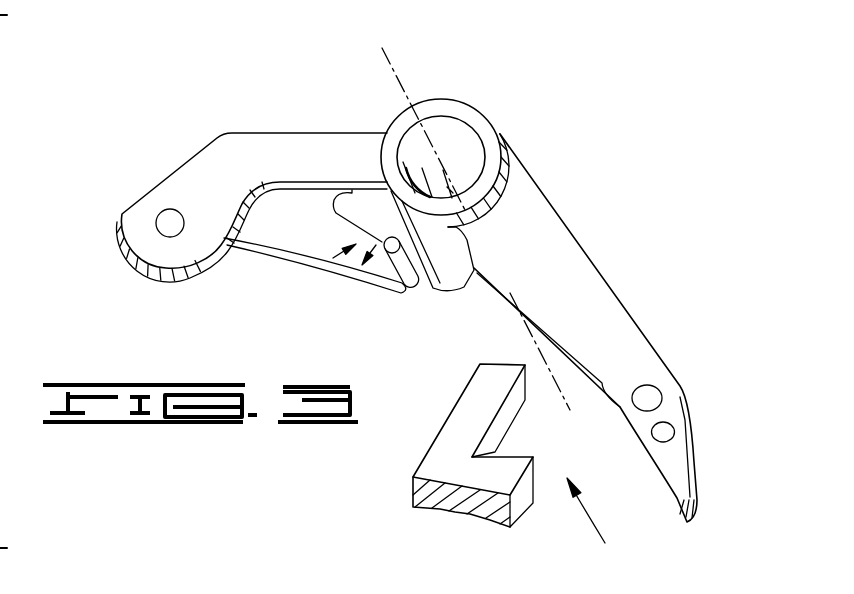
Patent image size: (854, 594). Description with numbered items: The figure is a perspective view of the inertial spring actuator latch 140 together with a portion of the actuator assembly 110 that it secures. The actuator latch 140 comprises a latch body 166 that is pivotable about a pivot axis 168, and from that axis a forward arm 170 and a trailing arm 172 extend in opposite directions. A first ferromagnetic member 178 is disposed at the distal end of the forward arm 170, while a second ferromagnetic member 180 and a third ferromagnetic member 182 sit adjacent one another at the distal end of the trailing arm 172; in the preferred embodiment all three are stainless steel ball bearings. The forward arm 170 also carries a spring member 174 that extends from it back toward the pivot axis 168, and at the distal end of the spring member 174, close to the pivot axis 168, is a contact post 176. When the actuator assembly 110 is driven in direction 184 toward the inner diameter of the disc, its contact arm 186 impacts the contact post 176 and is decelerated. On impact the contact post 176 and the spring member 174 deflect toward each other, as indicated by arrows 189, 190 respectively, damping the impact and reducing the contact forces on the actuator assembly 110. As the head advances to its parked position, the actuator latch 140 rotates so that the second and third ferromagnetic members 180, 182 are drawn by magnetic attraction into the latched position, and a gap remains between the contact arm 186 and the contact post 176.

The actuator assembly 110 is at (432, 412).
The actuator latch 140 is at (350, 93).
The latch body 166 is at (508, 168).
The pivot axis 168 is at (402, 83).
The forward arm 170 is at (193, 170).
The trailing arm 172 is at (583, 283).
The spring member 174 is at (260, 225).
The contact post 176 is at (409, 285).
The first ferromagnetic member 178 is at (170, 223).
The second ferromagnetic member 180 is at (648, 398).
The third ferromagnetic member 182 is at (663, 433).
The direction 184 is at (597, 537).
The contact arm 186 is at (413, 510).
The arrow 189 is at (380, 250).
The arrow 190 is at (317, 250).